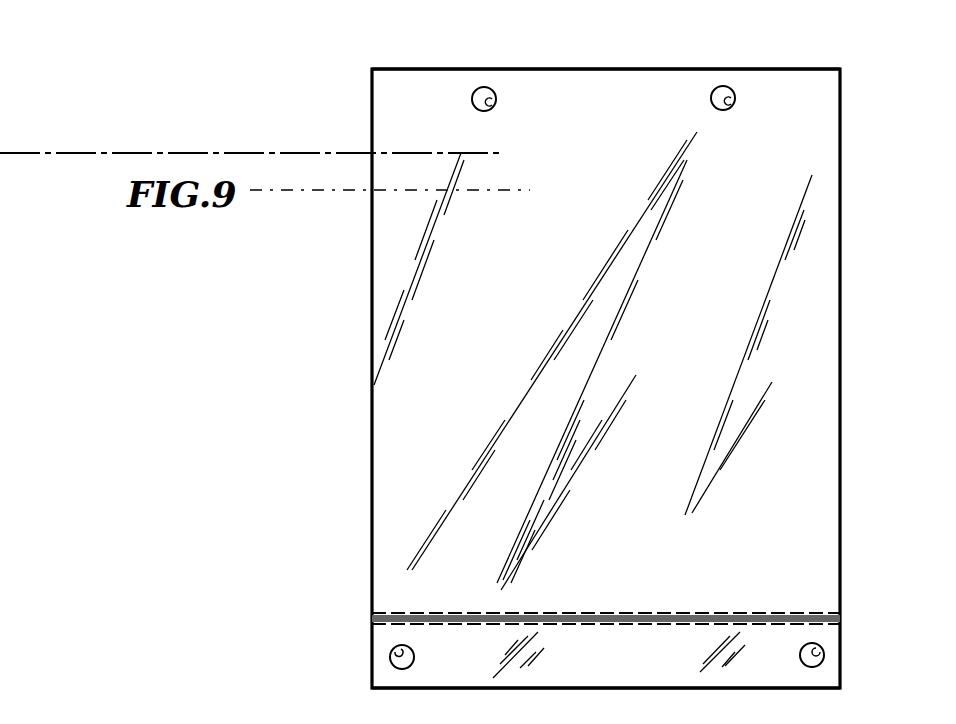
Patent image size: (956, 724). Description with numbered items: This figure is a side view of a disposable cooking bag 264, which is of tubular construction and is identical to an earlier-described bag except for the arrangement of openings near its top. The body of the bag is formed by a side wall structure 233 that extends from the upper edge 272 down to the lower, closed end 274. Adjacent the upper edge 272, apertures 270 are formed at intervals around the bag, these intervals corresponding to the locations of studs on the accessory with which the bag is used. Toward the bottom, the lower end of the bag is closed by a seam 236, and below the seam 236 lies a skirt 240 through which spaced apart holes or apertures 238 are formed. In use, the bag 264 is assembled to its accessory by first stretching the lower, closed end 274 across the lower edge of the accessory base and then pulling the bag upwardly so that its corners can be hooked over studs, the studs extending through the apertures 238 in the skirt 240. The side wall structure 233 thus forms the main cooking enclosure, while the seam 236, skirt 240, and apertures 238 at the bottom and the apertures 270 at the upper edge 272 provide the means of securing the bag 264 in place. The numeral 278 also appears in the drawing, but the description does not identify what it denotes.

The bag 264 is at (430, 52).
The upper edge 272 is at (578, 68).
The lower, closed end 274 is at (613, 688).
The apertures 270 is at (492, 107).
The holes or apertures 238 is at (390, 656).
The side wall structure 233 is at (517, 287).
The seam 236 is at (590, 613).
The skirt 240 is at (672, 673).
The lower member 278 is at (228, 722).